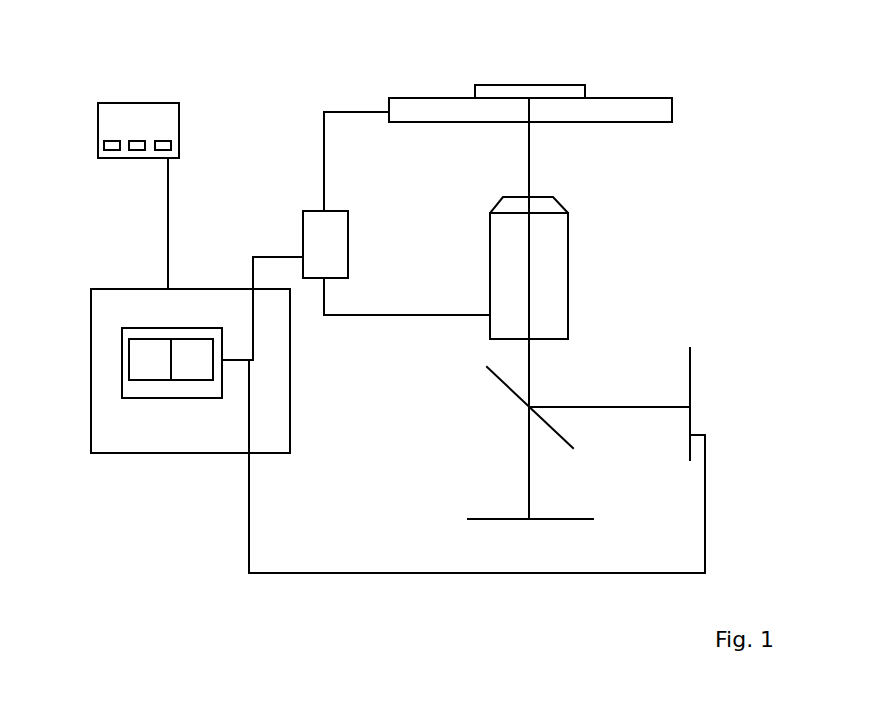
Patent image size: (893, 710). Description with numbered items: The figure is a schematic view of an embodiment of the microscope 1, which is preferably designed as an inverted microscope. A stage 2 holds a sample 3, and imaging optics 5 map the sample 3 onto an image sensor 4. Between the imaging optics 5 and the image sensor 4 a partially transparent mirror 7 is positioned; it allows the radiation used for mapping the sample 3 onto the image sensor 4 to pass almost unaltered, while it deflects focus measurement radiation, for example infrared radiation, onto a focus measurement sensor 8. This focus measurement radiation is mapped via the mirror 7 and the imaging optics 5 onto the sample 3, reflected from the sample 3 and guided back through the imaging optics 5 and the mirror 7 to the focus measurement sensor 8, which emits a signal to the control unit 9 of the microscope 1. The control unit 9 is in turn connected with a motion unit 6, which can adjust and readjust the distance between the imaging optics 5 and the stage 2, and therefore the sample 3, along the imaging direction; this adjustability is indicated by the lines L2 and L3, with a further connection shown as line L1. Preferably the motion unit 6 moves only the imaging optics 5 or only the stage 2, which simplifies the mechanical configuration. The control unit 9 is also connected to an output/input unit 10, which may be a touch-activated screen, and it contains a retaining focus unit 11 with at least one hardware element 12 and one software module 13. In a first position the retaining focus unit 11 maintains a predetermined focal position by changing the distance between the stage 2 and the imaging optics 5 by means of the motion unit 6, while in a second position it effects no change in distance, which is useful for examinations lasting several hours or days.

The microscope 1 is at (258, 72).
The stage 2 is at (388, 107).
The sample 3 is at (585, 90).
The image sensor 4 is at (487, 518).
The imaging optics 5 is at (568, 264).
The motion unit 6 is at (217, 453).
The partially transparent mirror 7 is at (490, 377).
The focus measurement sensor 8 is at (691, 365).
The control unit 9 is at (303, 225).
The output/input unit 10 is at (140, 103).
The retaining focus unit 11 is at (183, 328).
The hardware element 12 is at (170, 338).
The software module 13 is at (128, 355).
The line L1 is at (249, 528).
The line L2 is at (384, 315).
The line L3 is at (324, 155).